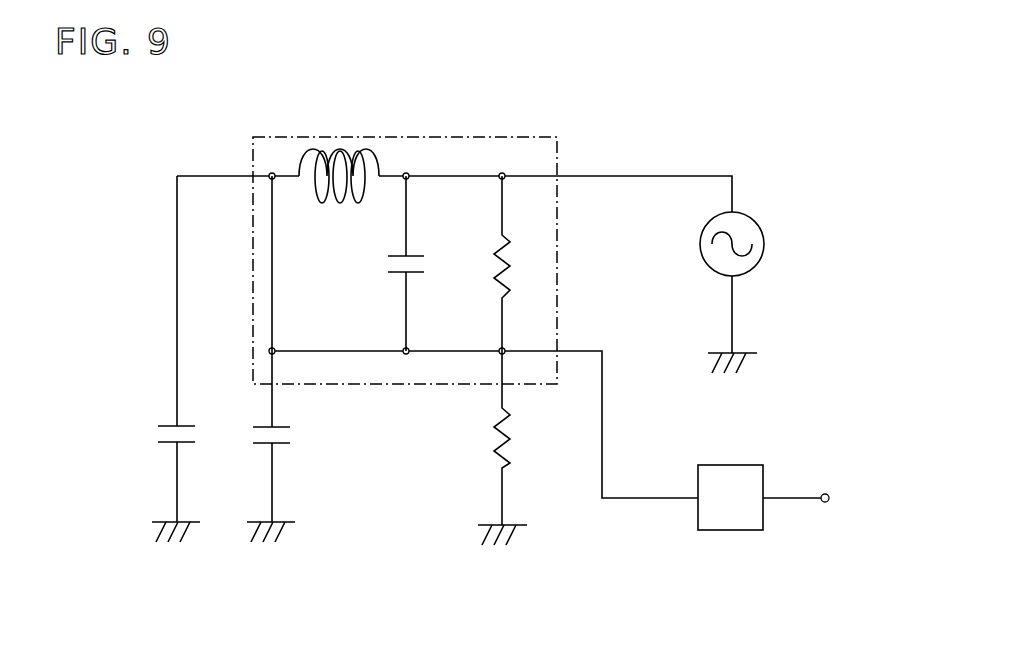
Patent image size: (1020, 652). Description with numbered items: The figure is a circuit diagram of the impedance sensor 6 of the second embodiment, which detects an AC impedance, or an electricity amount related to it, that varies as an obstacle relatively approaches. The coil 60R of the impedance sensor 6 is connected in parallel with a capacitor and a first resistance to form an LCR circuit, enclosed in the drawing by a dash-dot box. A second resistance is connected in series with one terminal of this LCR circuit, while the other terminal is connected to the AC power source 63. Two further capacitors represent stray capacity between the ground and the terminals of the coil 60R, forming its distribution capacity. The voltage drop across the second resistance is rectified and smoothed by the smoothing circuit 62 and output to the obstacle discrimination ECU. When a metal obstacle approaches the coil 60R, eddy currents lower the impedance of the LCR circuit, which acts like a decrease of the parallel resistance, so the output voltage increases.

The impedance sensor 6 is at (646, 107).
The coil 60R is at (313, 150).
The smoothing circuit 62 is at (732, 465).
The AC power source 63 is at (758, 223).